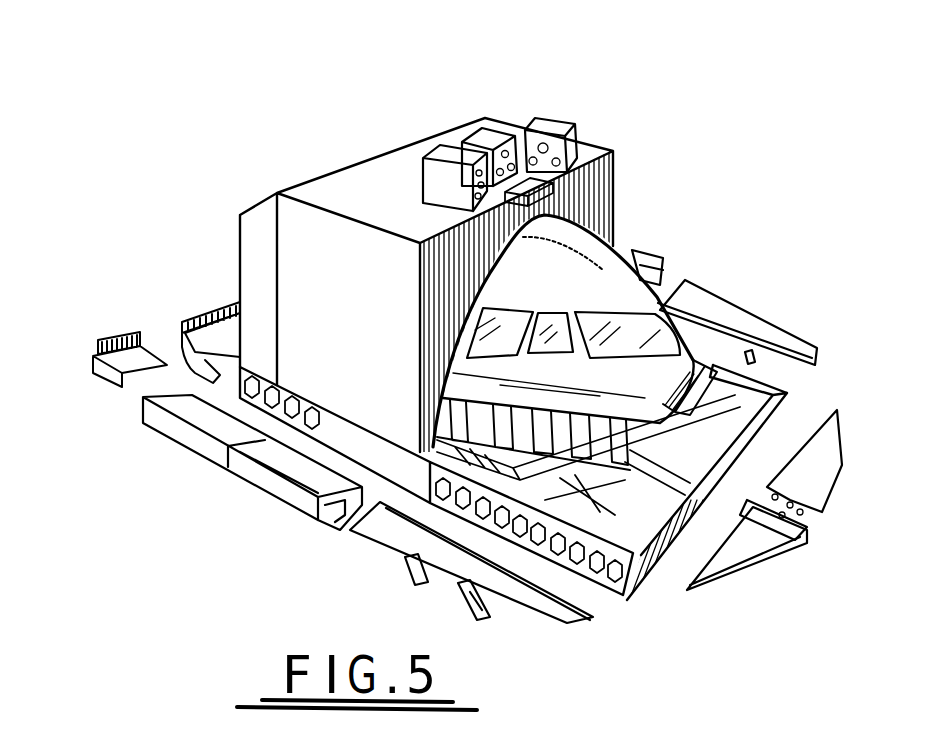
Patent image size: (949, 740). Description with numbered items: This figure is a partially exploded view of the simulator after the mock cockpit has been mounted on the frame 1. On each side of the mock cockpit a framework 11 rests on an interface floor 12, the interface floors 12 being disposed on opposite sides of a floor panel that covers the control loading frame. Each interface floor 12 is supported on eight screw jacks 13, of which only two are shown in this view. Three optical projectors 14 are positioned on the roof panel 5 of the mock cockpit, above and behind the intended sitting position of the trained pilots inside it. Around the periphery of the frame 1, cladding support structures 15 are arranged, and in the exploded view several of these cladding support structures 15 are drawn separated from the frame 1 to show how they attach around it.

The frame 1 is at (634, 602).
The roof panel 5 is at (390, 187).
The framework 11 is at (752, 522).
The interface floor 12 is at (757, 380).
The screw jack 13 is at (400, 566).
The optical projector 14 is at (537, 133).
The cladding support structure 15 is at (213, 310).